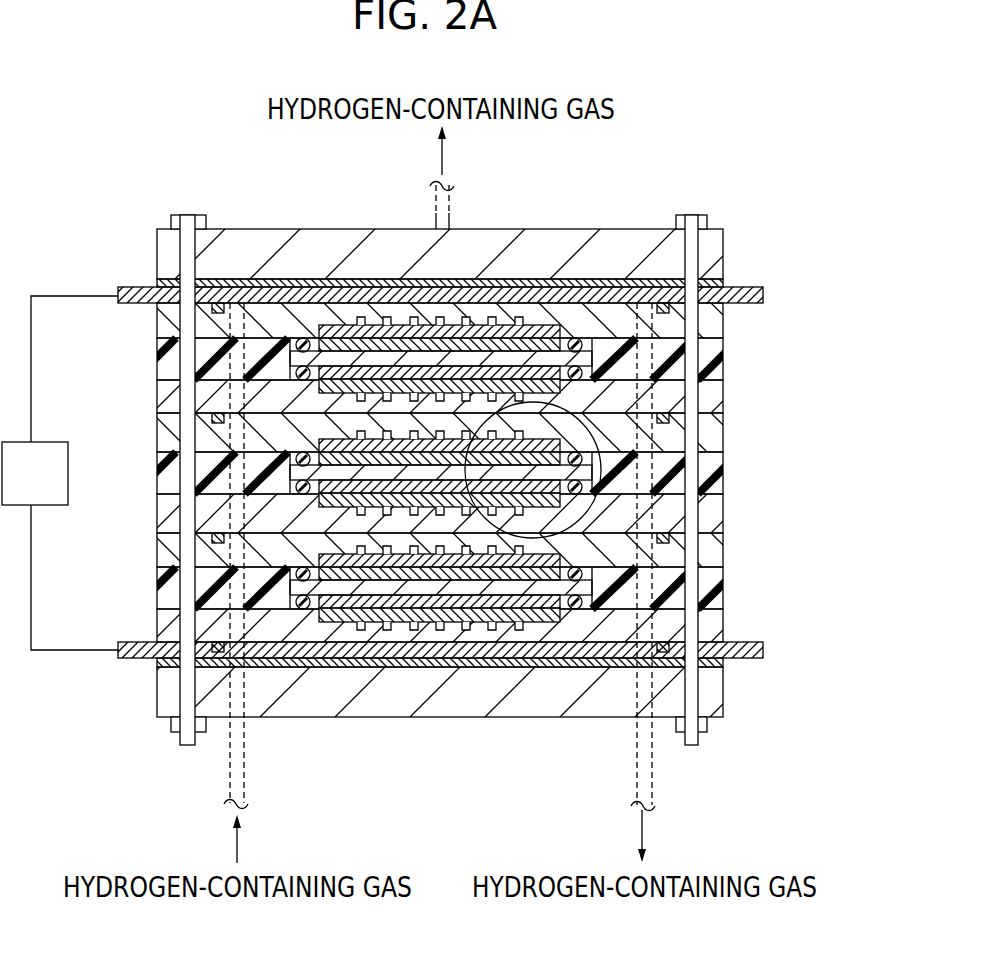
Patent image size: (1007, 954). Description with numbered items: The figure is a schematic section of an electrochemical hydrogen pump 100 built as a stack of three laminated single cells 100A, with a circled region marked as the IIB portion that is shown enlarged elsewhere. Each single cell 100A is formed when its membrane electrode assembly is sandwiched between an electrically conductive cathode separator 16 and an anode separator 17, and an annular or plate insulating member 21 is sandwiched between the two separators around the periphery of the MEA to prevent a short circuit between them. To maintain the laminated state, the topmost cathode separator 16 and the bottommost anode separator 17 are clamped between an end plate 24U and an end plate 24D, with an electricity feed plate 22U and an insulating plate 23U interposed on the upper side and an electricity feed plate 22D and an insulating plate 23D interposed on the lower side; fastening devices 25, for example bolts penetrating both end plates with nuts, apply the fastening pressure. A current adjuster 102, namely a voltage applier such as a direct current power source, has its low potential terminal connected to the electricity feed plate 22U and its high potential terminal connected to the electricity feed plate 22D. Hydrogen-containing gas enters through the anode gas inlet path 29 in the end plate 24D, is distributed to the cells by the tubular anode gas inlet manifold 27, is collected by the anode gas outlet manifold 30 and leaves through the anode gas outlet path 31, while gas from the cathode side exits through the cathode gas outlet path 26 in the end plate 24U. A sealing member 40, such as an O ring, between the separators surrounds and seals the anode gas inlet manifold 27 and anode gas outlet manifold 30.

The electrochemical hydrogen pump 100 is at (365, 71).
The single cell 100A is at (435, 472).
The current adjuster 102 is at (53, 487).
The cathode separator 16 is at (713, 437).
The anode separator 17 is at (713, 515).
The insulating member 21 is at (713, 475).
The electricity feed plate 22U is at (763, 296).
The electricity feed plate 22D is at (763, 650).
The insulating plate 23U is at (715, 284).
The insulating plate 23D is at (713, 662).
The end plate 24U is at (715, 247).
The end plate 24D is at (713, 688).
The fastening device 25 is at (187, 215).
The cathode gas outlet path 26 is at (435, 212).
The anode gas inlet manifold 27 is at (228, 590).
The anode gas inlet path 29 is at (244, 766).
The anode gas outlet manifold 30 is at (652, 592).
The anode gas outlet path 31 is at (635, 768).
The sealing member 40 is at (669, 415).
The IIB portion IIB is at (598, 420).